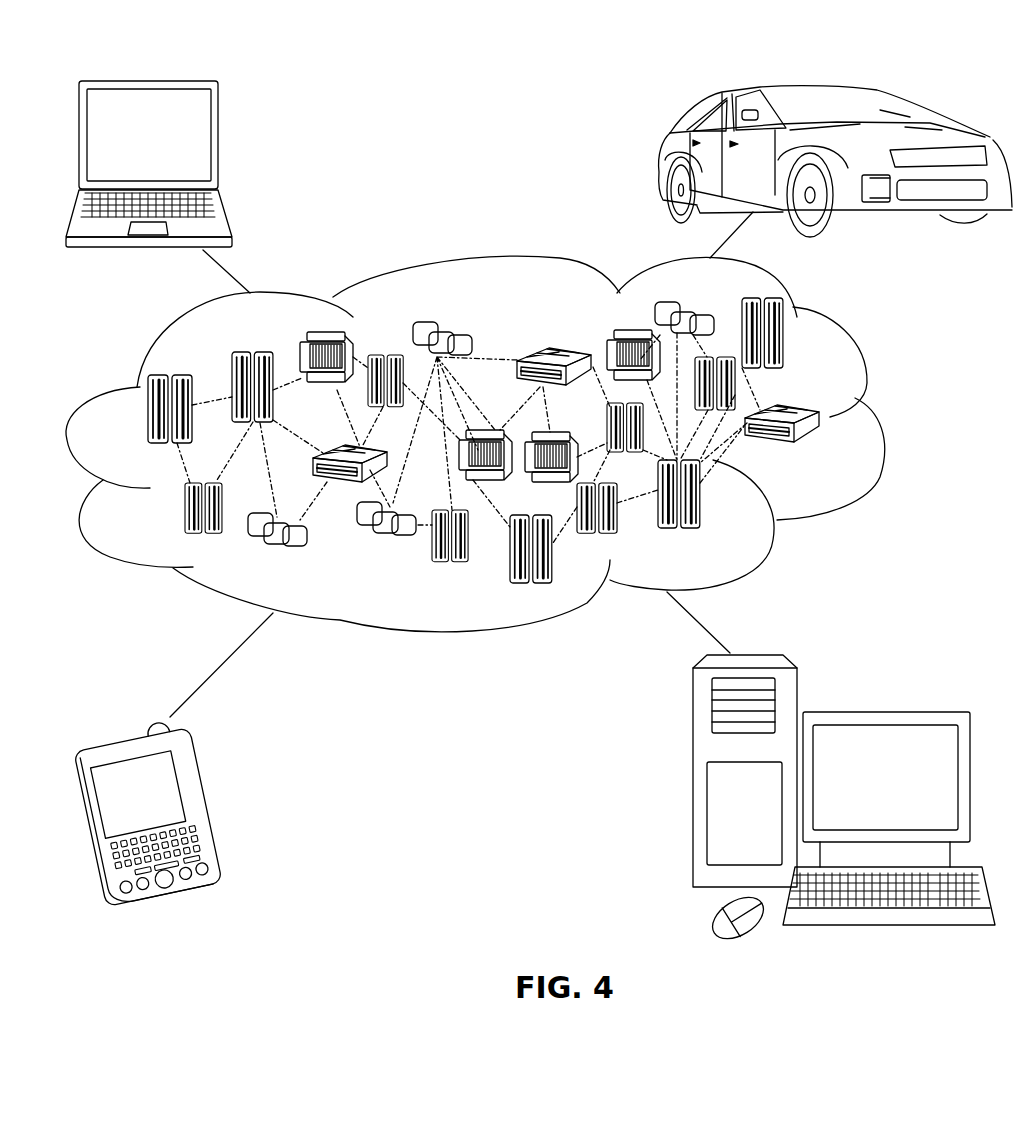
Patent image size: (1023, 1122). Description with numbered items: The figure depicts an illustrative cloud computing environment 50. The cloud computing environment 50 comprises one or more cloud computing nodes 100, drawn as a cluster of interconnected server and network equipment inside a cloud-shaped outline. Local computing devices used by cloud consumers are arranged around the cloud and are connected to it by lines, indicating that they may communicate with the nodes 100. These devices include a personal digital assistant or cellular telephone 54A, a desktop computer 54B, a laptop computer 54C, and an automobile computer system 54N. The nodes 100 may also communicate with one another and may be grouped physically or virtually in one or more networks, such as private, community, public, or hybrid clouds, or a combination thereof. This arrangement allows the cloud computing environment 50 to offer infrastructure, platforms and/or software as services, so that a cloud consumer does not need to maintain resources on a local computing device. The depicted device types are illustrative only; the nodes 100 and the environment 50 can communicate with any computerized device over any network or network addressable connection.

The personal digital assistant or cellular telephone 54A is at (208, 807).
The desktop computer 54B is at (882, 712).
The laptop computer 54C is at (222, 145).
The automobile computer system 54N is at (660, 160).
The cloud computing environment 50 is at (883, 420).
The cloud computing nodes 100 is at (827, 450).